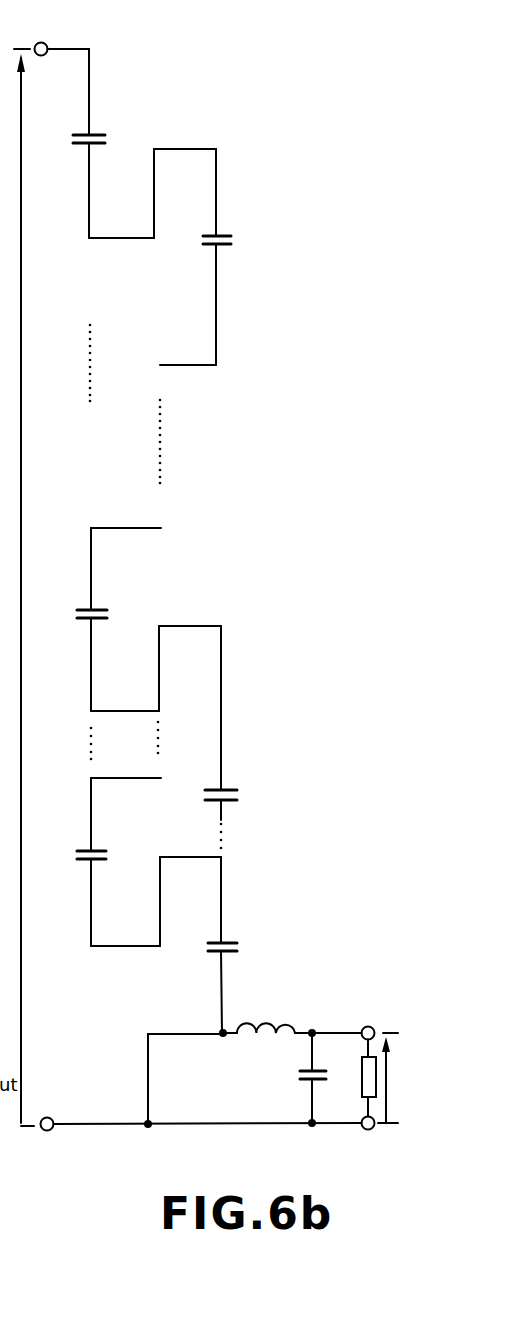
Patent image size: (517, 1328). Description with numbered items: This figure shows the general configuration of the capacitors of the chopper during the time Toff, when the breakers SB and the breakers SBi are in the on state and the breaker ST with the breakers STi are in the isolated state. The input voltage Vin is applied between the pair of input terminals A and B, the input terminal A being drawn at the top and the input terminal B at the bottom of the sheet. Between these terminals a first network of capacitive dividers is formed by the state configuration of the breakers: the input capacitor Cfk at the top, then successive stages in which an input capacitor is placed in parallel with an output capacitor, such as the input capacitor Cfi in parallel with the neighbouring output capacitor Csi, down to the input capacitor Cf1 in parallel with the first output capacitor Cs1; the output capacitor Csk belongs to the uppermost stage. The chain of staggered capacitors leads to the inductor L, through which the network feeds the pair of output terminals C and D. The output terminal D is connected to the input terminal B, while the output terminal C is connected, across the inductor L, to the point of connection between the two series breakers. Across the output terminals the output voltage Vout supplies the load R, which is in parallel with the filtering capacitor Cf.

The input terminal A is at (38, 43).
The input terminal B is at (50, 1131).
The output terminal C is at (371, 1026).
The output terminal D is at (367, 1130).
The input voltage Vin is at (34, 587).
The output voltage Vout is at (402, 1078).
The input capacitor Cfk is at (74, 140).
The output capacitor Csk is at (233, 241).
The input capacitor Cfi is at (76, 616).
The output capacitor Csi is at (240, 797).
The input capacitor Cf1 is at (75, 856).
The output capacitor Cs1 is at (240, 948).
The inductor L is at (262, 1027).
The filtering capacitor Cf is at (298, 1074).
The load R is at (359, 1080).